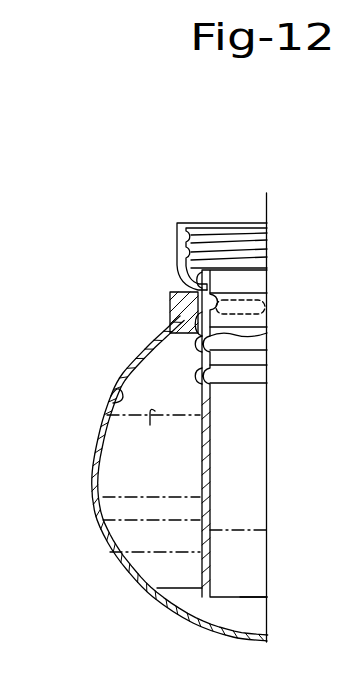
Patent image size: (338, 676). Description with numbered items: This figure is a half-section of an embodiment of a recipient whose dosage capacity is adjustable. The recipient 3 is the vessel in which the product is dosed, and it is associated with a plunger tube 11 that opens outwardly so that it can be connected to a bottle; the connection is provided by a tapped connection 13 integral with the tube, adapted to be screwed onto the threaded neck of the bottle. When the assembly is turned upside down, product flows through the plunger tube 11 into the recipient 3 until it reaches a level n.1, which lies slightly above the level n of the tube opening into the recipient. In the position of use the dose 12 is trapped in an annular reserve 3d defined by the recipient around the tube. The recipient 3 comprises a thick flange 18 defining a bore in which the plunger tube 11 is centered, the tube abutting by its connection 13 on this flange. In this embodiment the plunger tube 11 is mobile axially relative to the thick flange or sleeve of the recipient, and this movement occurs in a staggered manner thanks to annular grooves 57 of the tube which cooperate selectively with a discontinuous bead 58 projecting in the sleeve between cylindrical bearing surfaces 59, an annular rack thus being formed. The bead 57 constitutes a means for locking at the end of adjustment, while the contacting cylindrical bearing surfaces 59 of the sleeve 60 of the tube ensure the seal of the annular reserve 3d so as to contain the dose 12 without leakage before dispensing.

The recipient 3 is at (96, 510).
The annular reserve 3d is at (112, 403).
The plunger tube 11 is at (201, 450).
The dose 12 is at (151, 480).
The tapped connection 13 is at (177, 249).
The thick flange 18 is at (170, 310).
The annular grooves 57 is at (240, 334).
The discontinuous bead 58 is at (240, 300).
The cylindrical bearing surfaces 59 is at (202, 333).
The sleeve 60 is at (198, 368).
The level n.1 is at (186, 588).
The level n is at (251, 597).